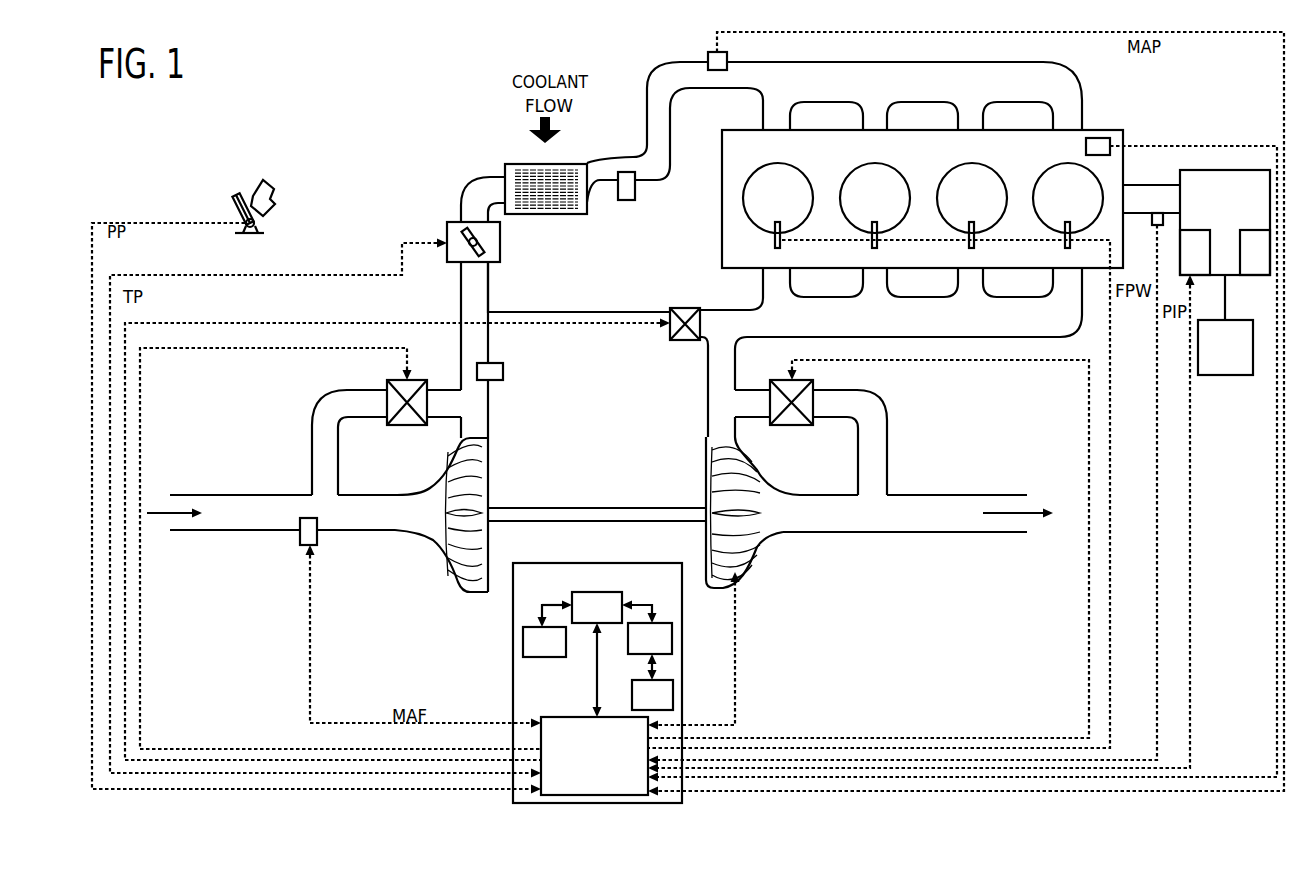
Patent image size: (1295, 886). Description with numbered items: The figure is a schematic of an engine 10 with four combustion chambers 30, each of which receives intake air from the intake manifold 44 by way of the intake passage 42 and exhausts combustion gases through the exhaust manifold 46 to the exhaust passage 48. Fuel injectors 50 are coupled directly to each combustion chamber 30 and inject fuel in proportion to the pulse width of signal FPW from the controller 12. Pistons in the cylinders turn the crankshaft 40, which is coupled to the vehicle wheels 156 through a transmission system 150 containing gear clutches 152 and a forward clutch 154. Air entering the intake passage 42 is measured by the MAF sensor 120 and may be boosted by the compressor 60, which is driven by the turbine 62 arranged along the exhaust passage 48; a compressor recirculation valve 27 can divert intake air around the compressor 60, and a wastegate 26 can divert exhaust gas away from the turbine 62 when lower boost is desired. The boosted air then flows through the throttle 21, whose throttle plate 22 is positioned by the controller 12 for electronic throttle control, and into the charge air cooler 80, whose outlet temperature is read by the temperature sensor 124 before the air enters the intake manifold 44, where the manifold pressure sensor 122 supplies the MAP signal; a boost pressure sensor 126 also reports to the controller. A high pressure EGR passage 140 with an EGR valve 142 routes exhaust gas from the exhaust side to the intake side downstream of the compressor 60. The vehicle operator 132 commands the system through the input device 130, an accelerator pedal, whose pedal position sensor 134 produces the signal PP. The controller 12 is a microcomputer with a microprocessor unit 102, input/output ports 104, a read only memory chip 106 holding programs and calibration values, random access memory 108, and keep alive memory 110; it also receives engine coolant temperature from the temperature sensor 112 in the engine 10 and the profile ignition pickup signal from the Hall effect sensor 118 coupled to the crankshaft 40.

The engine 10 is at (1018, 157).
The controller 12 is at (553, 697).
The throttle 21 is at (452, 222).
The throttle plate 22 is at (490, 250).
The wastegate 26 is at (813, 388).
The compressor recirculation valve 27 is at (387, 388).
The combustion chamber 30 is at (787, 208).
The crankshaft 40 is at (1140, 185).
The intake passage 42 is at (227, 524).
The intake manifold 44 is at (807, 89).
The exhaust manifold 46 is at (783, 329).
The exhaust passage 48 is at (852, 522).
The fuel injector 50 is at (775, 245).
The compressor 60 is at (445, 558).
The turbine 62 is at (750, 470).
The charge air cooler 80 is at (508, 165).
The microprocessor unit 102 is at (562, 600).
The input/output ports 104 is at (633, 790).
The read only memory chip 106 is at (523, 650).
The random access memory 108 is at (671, 625).
The keep alive memory 110 is at (673, 682).
The temperature sensor 112 is at (1100, 138).
The Hall effect sensor 118 is at (1152, 225).
The MAF sensor 120 is at (318, 535).
The manifold pressure sensor 122 is at (708, 54).
The temperature sensor 124 is at (628, 200).
The boost pressure sensor 126 is at (500, 380).
The input device 130 is at (232, 207).
The vehicle operator 132 is at (275, 193).
The pedal position sensor 134 is at (258, 223).
The EGR passage 140 is at (575, 312).
The EGR valve 142 is at (690, 308).
The transmission system 150 is at (1240, 207).
The gear clutches 152 is at (1209, 265).
The forward clutch 154 is at (1269, 265).
The vehicle wheels 156 is at (1240, 359).